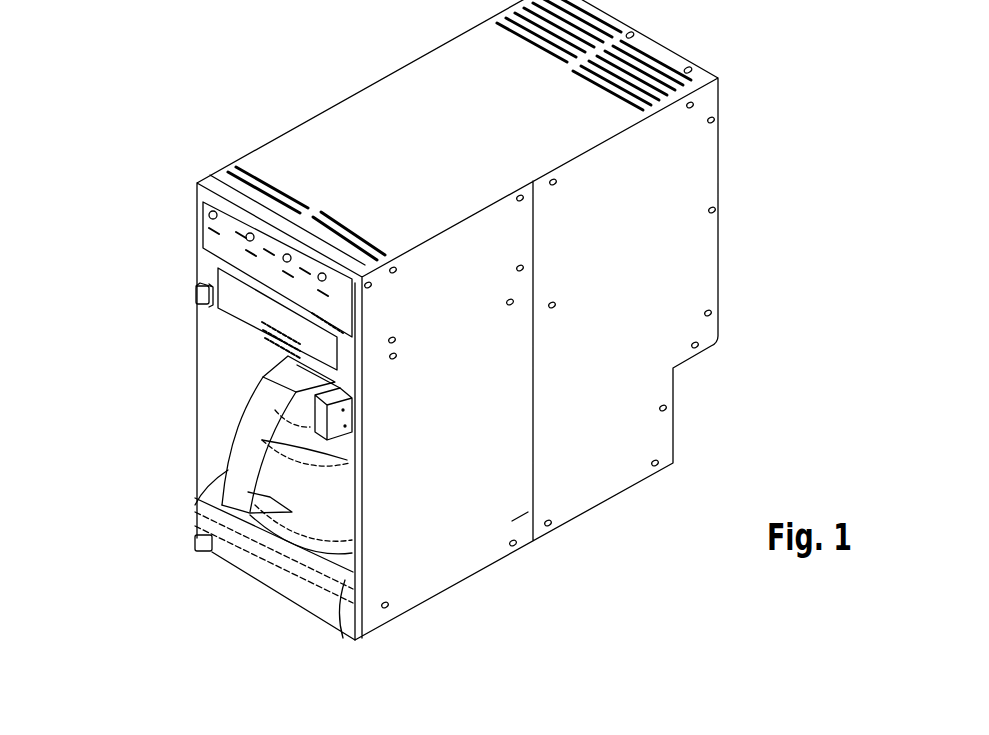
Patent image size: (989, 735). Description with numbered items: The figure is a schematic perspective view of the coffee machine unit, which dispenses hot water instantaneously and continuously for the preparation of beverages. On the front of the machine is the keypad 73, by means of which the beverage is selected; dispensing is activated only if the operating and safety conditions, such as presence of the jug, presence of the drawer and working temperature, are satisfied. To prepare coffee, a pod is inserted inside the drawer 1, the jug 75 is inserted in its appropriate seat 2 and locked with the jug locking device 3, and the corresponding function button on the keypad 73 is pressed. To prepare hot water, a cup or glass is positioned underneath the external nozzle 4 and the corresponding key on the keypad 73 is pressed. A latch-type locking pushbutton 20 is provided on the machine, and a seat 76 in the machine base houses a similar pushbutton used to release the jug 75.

The drawer 1 is at (235, 315).
The seat 2 is at (345, 565).
The jug locking device 3 is at (220, 550).
The external nozzle 4 is at (350, 438).
The locking pushbutton 20 is at (195, 295).
The keypad 73 is at (217, 222).
The jug 75 is at (245, 443).
The seat of the machine base 76 is at (195, 542).